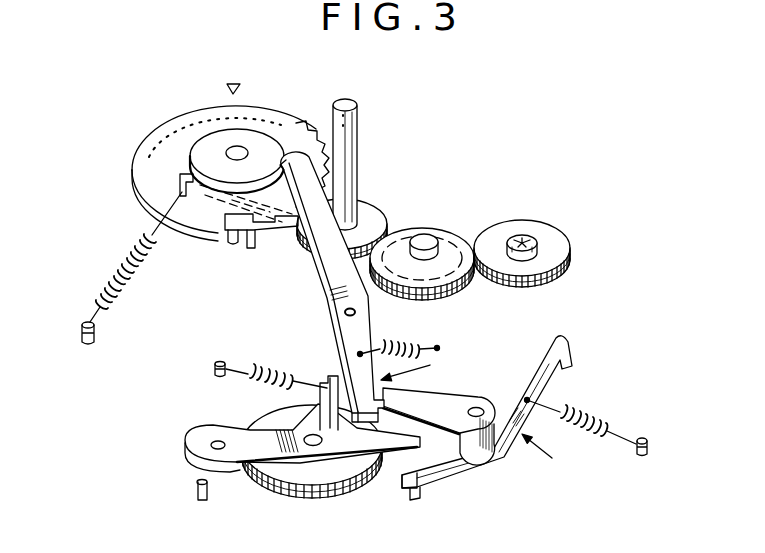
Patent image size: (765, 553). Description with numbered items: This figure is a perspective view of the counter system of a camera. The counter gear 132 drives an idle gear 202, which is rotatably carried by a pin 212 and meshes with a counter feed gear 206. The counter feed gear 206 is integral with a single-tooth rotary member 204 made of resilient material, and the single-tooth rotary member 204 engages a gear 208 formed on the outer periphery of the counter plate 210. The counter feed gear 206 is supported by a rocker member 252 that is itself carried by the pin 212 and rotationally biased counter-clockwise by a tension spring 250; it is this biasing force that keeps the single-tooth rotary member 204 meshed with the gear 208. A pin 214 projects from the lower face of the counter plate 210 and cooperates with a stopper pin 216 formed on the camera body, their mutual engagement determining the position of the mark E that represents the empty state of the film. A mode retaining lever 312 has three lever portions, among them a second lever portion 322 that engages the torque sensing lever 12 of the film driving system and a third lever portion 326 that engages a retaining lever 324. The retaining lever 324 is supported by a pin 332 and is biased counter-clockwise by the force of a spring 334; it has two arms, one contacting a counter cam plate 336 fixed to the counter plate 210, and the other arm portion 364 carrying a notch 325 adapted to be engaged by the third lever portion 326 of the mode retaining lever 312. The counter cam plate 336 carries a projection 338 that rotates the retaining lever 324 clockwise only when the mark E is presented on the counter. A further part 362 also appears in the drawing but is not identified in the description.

The torque sensing lever 12 is at (283, 480).
The counter gear 132 is at (557, 241).
The idle gear 202 is at (458, 237).
The single-tooth rotary member 204 is at (347, 116).
The counter feed gear 206 is at (372, 222).
The gear 208 is at (318, 132).
The counter plate 210 is at (178, 119).
The pin 212 is at (423, 245).
The pin 214 is at (230, 237).
The stopper pin 216 is at (252, 240).
The tension spring 250 is at (100, 292).
The rocker member 252 is at (396, 233).
The mode retaining lever 312 is at (584, 445).
The second lever portion 322 is at (432, 471).
The retaining lever 324 is at (430, 371).
The notch 325 is at (377, 417).
The third lever portion 326 is at (445, 413).
The pin 332 is at (346, 312).
The spring 334 is at (410, 350).
The counter cam plate 336 is at (222, 148).
The projection 338 is at (262, 122).
The pawl 362 is at (297, 156).
The arm portion 364 is at (305, 445).